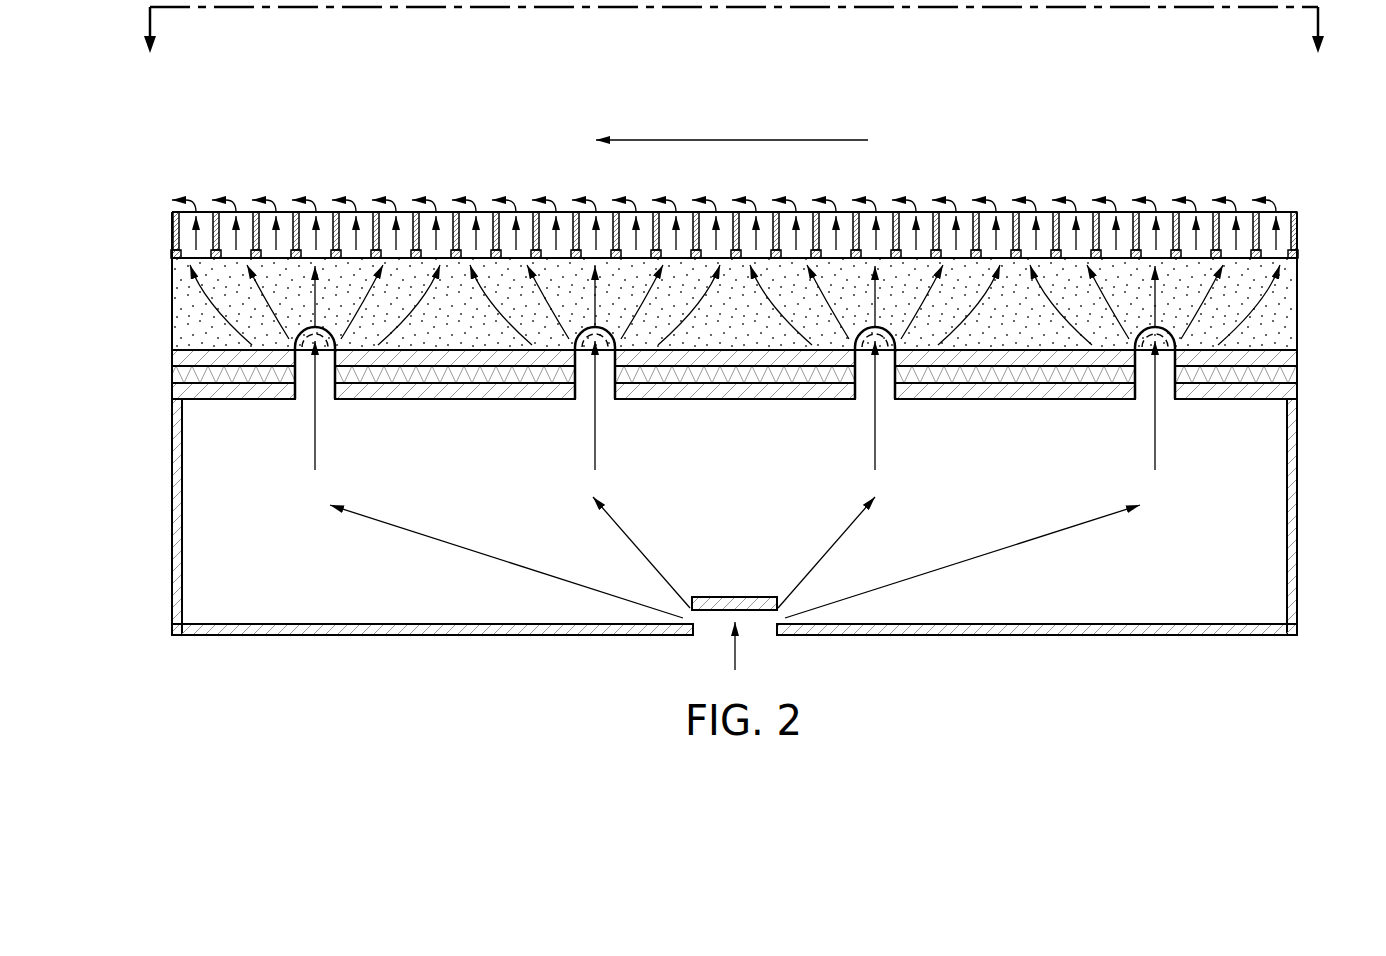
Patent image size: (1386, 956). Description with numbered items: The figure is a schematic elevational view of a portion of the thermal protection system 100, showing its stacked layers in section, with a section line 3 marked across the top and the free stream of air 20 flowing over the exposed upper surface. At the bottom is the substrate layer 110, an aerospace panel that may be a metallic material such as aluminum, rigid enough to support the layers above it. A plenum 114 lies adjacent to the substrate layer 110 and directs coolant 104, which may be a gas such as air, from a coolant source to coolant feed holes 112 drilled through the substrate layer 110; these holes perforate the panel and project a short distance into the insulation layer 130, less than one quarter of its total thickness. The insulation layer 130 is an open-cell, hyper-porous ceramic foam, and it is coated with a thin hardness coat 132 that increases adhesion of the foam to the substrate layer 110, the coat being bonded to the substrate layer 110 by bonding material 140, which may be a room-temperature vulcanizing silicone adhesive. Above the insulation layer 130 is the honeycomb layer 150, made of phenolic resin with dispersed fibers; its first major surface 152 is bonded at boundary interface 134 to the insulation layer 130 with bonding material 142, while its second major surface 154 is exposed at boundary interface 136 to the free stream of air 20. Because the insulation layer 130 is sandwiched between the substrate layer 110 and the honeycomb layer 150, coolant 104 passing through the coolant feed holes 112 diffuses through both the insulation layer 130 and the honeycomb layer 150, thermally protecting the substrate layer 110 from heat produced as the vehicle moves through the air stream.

The section line 3- 3 is at (734, 57).
The free stream of air 20 is at (752, 139).
The thermal protection system 100 is at (928, 125).
The coolant 104 is at (556, 232).
The substrate layer 110 is at (1297, 393).
The coolant feed holes 112 is at (296, 400).
The plenum 114 is at (377, 637).
The insulation layer 130 is at (1297, 305).
The hardness coat 132 is at (1297, 358).
The boundary interface 134 is at (172, 254).
The boundary interface 136 is at (172, 212).
The bonding material 140 is at (172, 374).
The bonding material 142 is at (1297, 254).
The honeycomb layer 150 is at (735, 213).
The first major surface 152 is at (474, 266).
The second major surface 154 is at (336, 212).